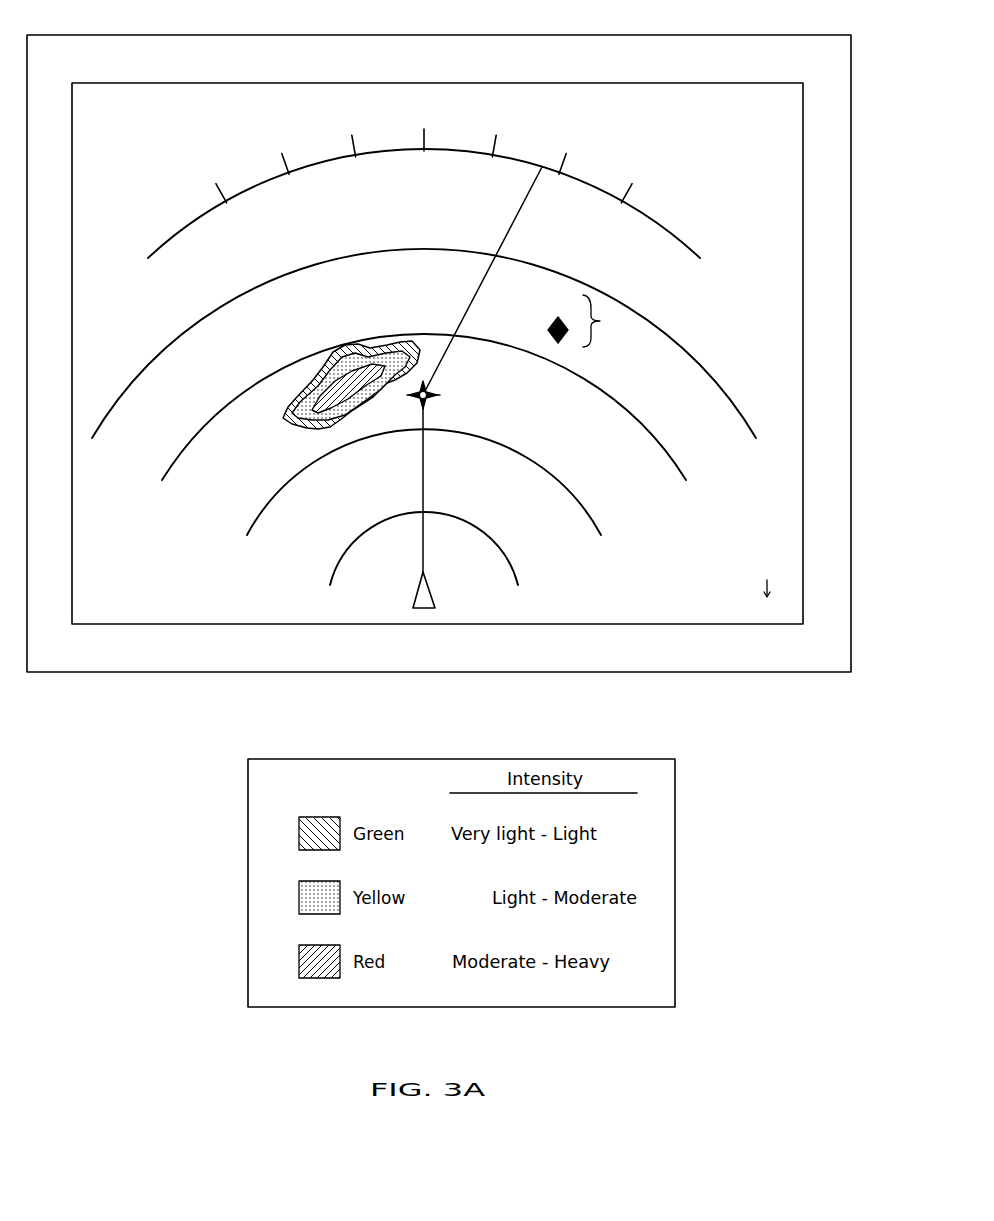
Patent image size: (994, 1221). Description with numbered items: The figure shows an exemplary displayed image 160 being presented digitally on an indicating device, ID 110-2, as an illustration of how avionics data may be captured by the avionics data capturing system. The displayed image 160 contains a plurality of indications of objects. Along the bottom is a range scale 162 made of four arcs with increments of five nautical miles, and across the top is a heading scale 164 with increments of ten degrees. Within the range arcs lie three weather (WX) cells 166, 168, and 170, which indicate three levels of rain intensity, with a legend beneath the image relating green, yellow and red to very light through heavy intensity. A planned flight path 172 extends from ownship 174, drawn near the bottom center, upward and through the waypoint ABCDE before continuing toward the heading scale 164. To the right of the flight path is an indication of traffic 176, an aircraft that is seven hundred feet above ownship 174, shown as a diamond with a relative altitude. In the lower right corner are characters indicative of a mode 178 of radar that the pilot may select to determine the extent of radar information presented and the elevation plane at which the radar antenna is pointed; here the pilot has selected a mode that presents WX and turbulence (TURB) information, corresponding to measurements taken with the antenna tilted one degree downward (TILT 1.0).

The indicating device (ID) 110-2 is at (439, 341).
The displayed image 160 is at (437, 342).
The range scale 162 is at (86, 443).
The heading scale 164 is at (252, 188).
The weather (WX) cell 166 is at (313, 378).
The weather (WX) cell 168 is at (330, 360).
The weather (WX) cell 170 is at (308, 397).
The planned flight path 172 is at (426, 457).
The ownship 174 is at (437, 600).
The traffic 176 is at (600, 321).
The mode 178 is at (683, 572).